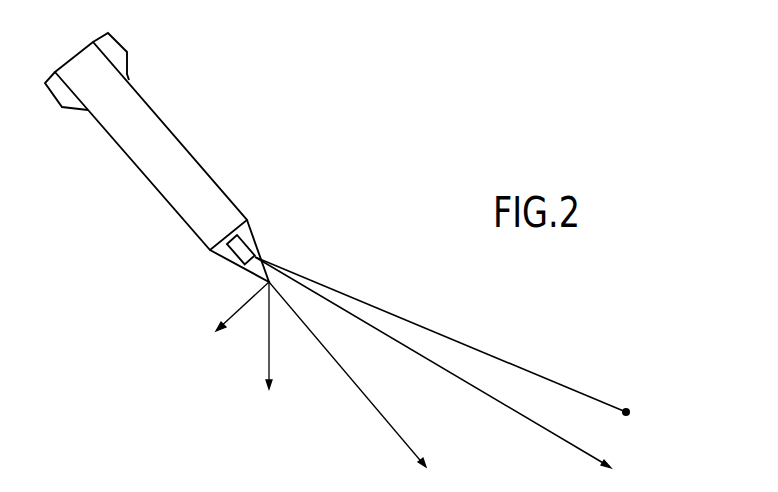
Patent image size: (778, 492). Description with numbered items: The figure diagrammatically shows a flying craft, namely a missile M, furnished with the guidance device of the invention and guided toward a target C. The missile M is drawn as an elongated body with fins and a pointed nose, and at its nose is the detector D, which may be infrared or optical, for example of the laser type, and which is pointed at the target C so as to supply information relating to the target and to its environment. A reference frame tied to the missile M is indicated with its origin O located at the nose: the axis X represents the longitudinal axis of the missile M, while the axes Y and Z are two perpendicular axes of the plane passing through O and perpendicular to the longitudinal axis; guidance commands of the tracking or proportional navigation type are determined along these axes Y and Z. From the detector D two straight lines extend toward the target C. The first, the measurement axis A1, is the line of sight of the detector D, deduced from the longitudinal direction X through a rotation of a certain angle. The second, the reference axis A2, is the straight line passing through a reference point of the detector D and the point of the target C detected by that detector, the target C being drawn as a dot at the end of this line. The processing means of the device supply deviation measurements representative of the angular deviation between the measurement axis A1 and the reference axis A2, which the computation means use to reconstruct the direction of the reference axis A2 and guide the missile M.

The missile M is at (152, 153).
The detector D is at (250, 240).
The origin of reference frame O is at (256, 285).
The longitudinal axis X is at (358, 374).
The transverse axis Y is at (242, 319).
The transverse axis Z is at (278, 341).
The measurement axis A1 is at (570, 440).
The reference axis A2 is at (592, 396).
The target C is at (637, 415).